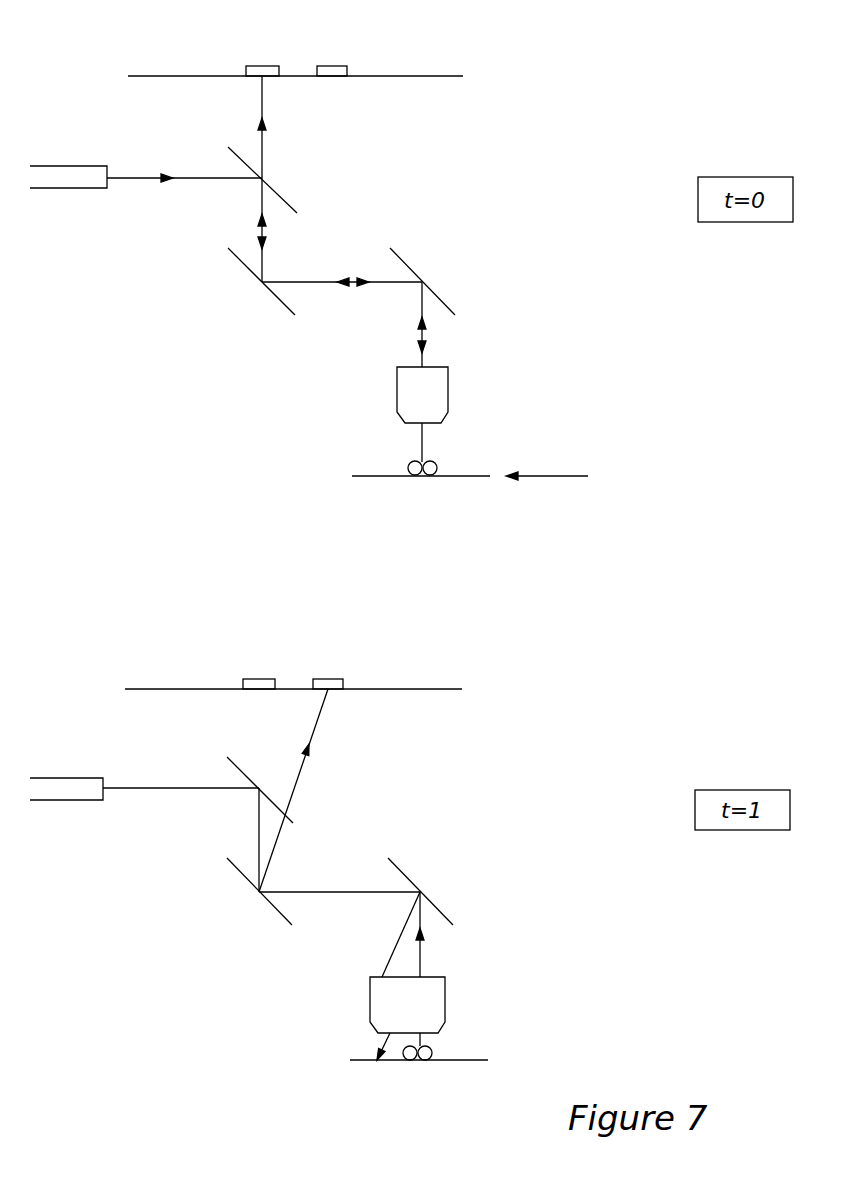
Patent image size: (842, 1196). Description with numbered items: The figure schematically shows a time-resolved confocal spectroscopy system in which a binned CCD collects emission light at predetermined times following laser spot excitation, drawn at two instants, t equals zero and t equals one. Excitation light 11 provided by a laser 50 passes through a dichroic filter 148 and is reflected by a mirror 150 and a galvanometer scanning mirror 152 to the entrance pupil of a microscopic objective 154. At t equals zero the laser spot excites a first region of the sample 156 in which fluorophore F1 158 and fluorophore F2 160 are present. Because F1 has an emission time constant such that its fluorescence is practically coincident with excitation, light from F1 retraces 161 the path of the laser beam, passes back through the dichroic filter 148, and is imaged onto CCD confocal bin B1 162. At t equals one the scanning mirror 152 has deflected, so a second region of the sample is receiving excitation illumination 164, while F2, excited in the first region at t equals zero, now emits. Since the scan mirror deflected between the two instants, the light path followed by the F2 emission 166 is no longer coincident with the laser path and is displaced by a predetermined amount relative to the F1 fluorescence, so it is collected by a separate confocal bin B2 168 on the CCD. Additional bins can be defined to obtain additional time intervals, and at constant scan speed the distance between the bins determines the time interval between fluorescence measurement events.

The excitation light 11 is at (190, 180).
The laser 50 is at (48, 182).
The dichroic filter 148 is at (282, 198).
The mirror 150 is at (284, 307).
The galvanometer scanning mirror 152 is at (453, 297).
The microscopic objective 154 is at (442, 405).
The sample 156 is at (569, 477).
The fluorophore F1 158 is at (433, 461).
The fluorophore F2 160 is at (413, 461).
The retraced path 161 is at (262, 93).
The CCD confocal bin B1 162 is at (252, 65).
The excitation illumination 164 is at (393, 948).
The deflected beam 166 is at (318, 727).
The confocal bin B2 168 is at (335, 68).